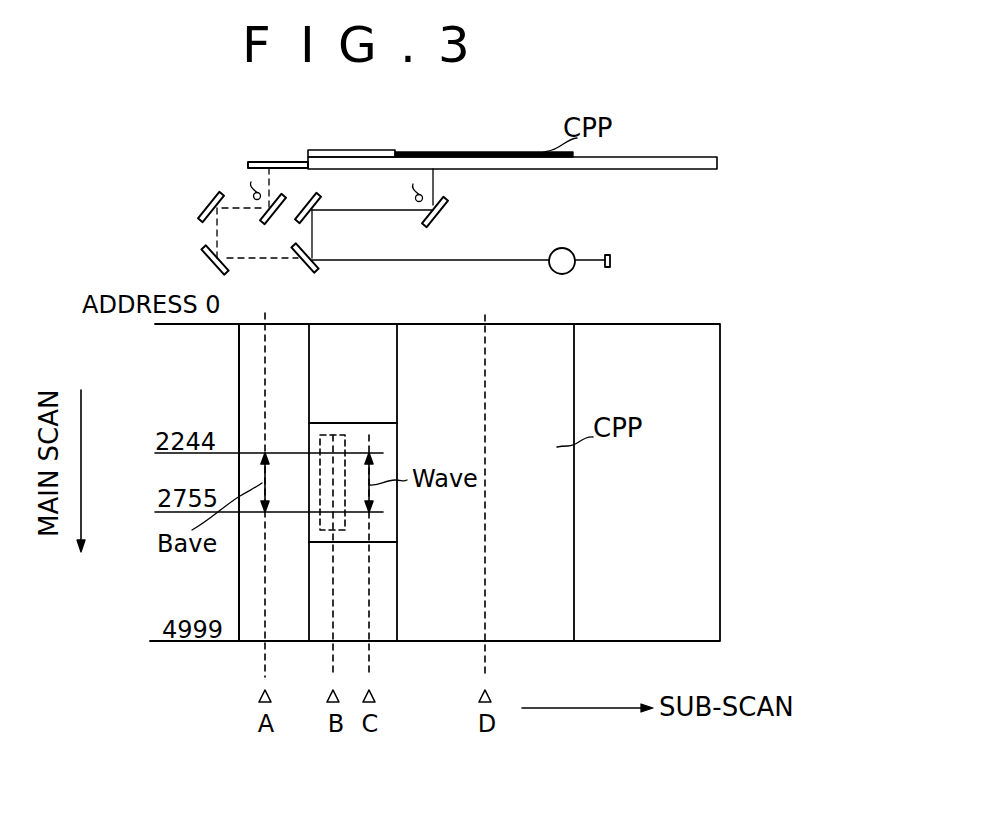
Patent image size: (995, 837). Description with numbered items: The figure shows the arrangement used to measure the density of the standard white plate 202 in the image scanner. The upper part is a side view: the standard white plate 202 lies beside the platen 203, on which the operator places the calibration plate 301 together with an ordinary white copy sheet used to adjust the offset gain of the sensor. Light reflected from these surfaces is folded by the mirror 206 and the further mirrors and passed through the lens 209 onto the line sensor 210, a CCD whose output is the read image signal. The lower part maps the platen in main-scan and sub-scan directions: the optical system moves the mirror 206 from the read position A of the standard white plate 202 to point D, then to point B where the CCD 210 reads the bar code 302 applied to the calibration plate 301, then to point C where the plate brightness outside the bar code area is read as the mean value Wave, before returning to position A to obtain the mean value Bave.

The standard white plate 202 is at (266, 162).
The platen 203 is at (658, 155).
The mirror 206 is at (283, 205).
The lens 209 is at (565, 250).
The line sensor 210 is at (611, 260).
The calibration plate 301 is at (356, 150).
The bar code 302 is at (330, 437).